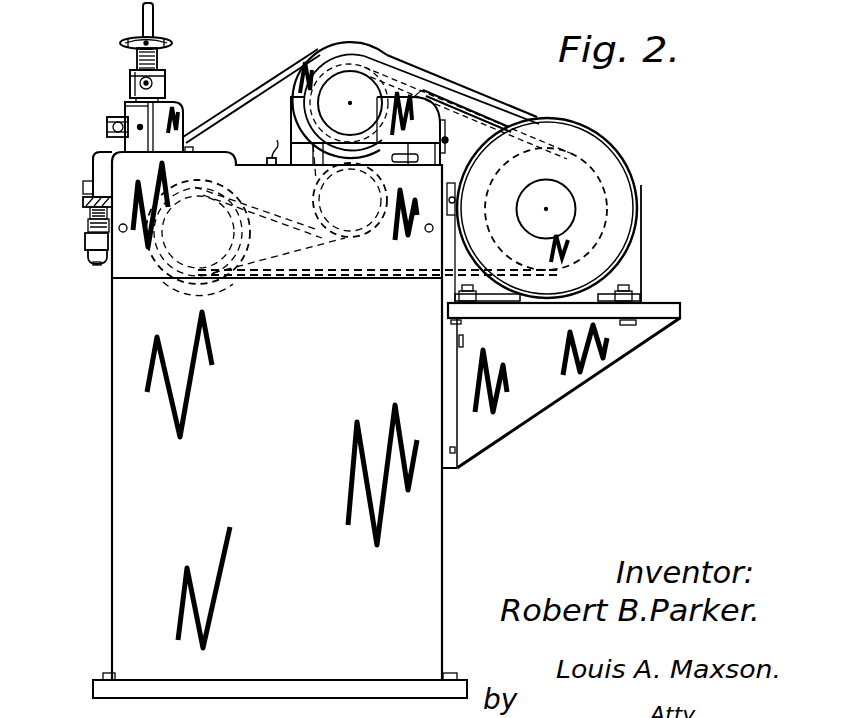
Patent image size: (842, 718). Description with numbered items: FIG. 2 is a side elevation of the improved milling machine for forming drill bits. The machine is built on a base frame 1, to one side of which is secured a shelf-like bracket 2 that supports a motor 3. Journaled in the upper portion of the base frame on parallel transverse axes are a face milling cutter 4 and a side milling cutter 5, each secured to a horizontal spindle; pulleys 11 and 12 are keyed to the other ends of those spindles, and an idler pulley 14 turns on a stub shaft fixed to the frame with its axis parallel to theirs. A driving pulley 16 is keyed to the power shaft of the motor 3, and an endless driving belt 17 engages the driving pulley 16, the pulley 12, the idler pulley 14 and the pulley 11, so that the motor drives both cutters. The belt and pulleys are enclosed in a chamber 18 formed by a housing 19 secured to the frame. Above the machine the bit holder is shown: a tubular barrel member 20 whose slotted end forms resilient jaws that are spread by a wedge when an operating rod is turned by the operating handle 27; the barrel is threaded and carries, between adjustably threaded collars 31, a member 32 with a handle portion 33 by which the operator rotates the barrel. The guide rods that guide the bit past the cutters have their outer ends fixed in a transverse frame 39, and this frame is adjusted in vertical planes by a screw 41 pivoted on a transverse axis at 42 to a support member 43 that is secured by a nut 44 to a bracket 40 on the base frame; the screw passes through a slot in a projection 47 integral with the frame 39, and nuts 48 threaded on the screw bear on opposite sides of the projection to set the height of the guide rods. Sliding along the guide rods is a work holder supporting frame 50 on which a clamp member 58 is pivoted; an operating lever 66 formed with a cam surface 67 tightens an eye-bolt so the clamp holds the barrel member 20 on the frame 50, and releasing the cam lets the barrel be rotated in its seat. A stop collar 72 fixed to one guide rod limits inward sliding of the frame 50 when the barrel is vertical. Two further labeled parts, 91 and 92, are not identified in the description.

The base frame 1 is at (110, 402).
The shelf-like bracket 2 is at (603, 324).
The motor 3 is at (620, 172).
The face milling cutter 4 is at (167, 287).
The side milling cutter 5 is at (353, 145).
The pulley 11 is at (230, 280).
The pulley 12 is at (458, 98).
The idler pulley 14 is at (302, 192).
The driving pulley 16 is at (553, 155).
The endless driving belt 17 is at (335, 281).
The chamber 18 is at (466, 103).
The housing 19 is at (463, 97).
The tubular barrel member 20 is at (157, 50).
The operating handle 27 is at (122, 42).
The collars 31 is at (131, 82).
The member 32 is at (131, 71).
The handle portion 33 is at (143, 22).
The transverse frame 39 is at (95, 157).
The bracket 40 is at (95, 252).
The screw 41 is at (92, 224).
The pivot 42 is at (97, 240).
The support member 43 is at (92, 210).
The nut 44 is at (98, 266).
The projection 47 is at (84, 199).
The nuts 48 is at (86, 181).
The work holder supporting frame 50 is at (183, 104).
The clamp member 58 is at (125, 104).
The operating lever 66 is at (107, 127).
The cam surface 67 is at (108, 118).
The stop collar 72 is at (277, 140).
The bar 91 is at (316, 51).
The pivot pin 92 is at (447, 139).